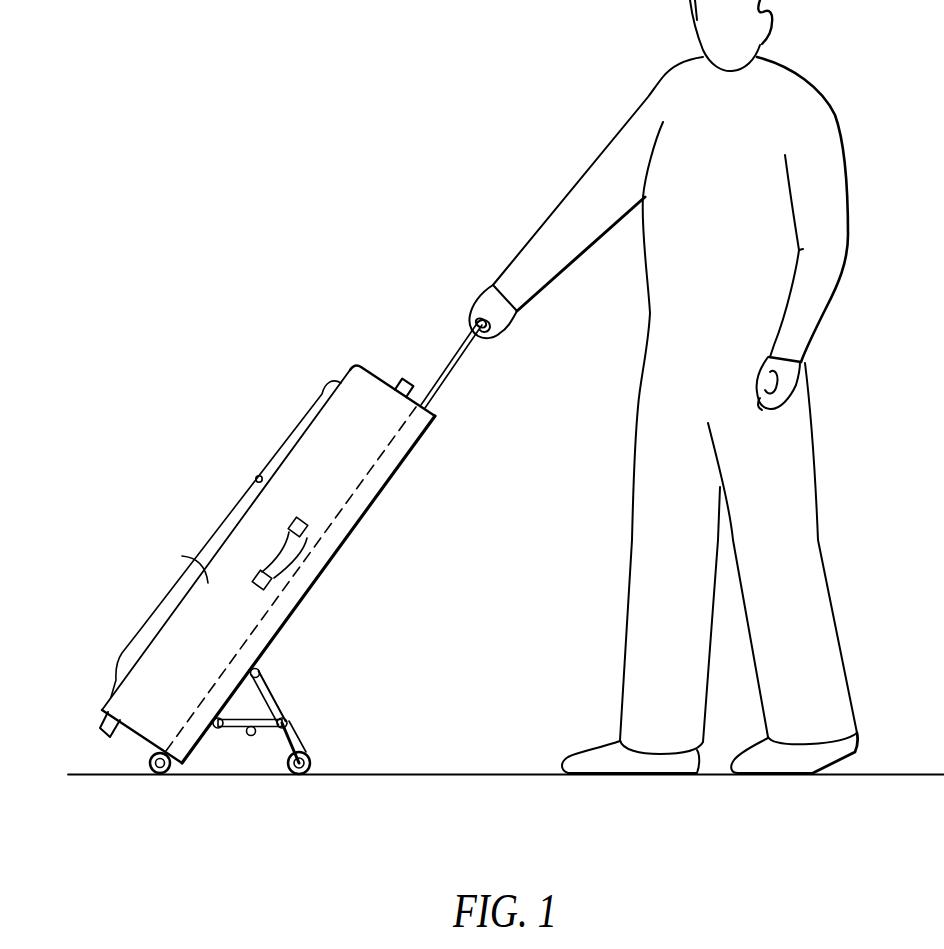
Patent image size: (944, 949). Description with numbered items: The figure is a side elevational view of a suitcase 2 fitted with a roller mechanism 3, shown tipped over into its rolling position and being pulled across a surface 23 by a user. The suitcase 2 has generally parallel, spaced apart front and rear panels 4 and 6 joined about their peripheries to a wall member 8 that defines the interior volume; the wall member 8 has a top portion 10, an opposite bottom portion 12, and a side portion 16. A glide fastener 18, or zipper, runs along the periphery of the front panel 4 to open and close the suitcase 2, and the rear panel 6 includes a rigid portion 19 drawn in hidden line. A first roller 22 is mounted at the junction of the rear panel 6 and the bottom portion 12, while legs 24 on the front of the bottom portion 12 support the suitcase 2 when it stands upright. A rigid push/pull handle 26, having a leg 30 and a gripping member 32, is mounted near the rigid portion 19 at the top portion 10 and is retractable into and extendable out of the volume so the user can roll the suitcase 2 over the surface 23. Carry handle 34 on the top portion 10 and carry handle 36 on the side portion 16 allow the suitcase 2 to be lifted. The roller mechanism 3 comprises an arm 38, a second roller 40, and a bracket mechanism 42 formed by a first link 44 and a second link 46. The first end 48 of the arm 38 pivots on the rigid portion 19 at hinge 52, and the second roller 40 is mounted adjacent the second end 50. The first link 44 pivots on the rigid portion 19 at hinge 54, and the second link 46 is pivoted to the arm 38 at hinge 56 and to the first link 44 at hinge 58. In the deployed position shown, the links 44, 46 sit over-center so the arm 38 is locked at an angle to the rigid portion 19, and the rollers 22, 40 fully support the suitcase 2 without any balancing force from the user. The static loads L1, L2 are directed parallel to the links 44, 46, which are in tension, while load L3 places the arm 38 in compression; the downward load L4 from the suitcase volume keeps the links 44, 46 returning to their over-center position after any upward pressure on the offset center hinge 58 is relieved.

The suitcase 2 is at (312, 552).
The roller mechanism 3 is at (301, 703).
The front panel 4 is at (219, 532).
The rear panel 6 is at (403, 461).
The wall member 8 is at (185, 560).
The top portion 10 is at (377, 370).
The bottom portion 12 is at (130, 732).
The side portion 16 is at (297, 457).
The glide fastener 18 is at (257, 477).
The rigid portion 19 is at (364, 500).
The first roller 22 is at (153, 769).
The surface 23 is at (480, 775).
The legs 24 is at (101, 721).
The push/pull handle 26 is at (470, 363).
The leg 30 is at (438, 396).
The gripping member 32 is at (486, 322).
The carry handle 34 is at (405, 373).
The carry handle 36 is at (298, 550).
The arm 38 is at (264, 717).
The second roller 40 is at (303, 773).
The bracket mechanism 42 is at (255, 705).
The first link 44 is at (233, 721).
The second link 46 is at (293, 735).
The first end 48 is at (268, 678).
The second end 50 is at (305, 742).
The hinge 52 is at (253, 668).
The hinge 54 is at (212, 722).
The hinge 56 is at (288, 722).
The hinge 58 is at (250, 736).
The static load L1 is at (222, 752).
The static load L2 is at (276, 751).
The static load L3 is at (292, 696).
The load L4 is at (258, 650).